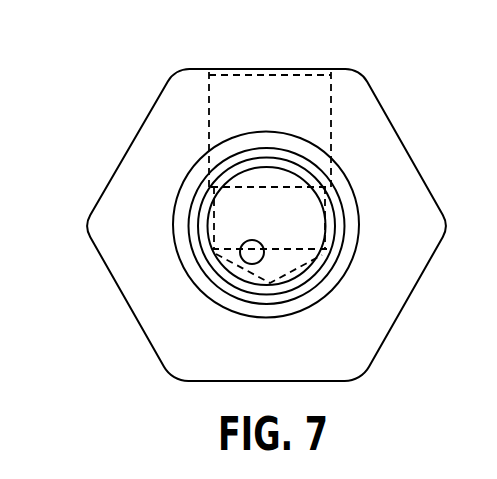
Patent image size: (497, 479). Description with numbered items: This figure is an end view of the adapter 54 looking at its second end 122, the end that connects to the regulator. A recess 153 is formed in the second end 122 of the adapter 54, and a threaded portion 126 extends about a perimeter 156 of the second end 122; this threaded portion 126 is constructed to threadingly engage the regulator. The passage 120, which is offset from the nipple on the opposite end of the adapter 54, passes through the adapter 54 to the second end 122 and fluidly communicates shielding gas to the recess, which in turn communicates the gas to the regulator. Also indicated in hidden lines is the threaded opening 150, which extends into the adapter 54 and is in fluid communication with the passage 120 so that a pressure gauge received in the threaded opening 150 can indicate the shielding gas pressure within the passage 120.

The adapter 54 is at (372, 80).
The second end 122 is at (290, 216).
The perimeter 156 is at (193, 189).
The threaded portion 126 is at (343, 228).
The recess 153 is at (210, 215).
The threaded opening 150 is at (212, 105).
The passage 120 is at (250, 263).